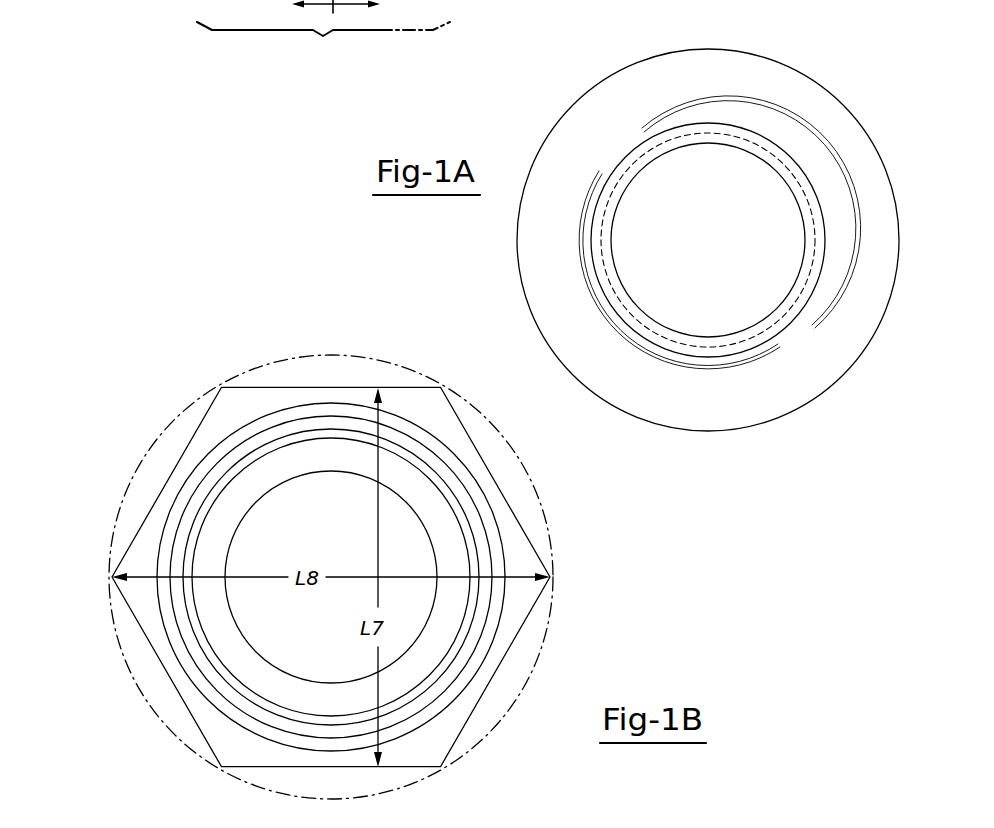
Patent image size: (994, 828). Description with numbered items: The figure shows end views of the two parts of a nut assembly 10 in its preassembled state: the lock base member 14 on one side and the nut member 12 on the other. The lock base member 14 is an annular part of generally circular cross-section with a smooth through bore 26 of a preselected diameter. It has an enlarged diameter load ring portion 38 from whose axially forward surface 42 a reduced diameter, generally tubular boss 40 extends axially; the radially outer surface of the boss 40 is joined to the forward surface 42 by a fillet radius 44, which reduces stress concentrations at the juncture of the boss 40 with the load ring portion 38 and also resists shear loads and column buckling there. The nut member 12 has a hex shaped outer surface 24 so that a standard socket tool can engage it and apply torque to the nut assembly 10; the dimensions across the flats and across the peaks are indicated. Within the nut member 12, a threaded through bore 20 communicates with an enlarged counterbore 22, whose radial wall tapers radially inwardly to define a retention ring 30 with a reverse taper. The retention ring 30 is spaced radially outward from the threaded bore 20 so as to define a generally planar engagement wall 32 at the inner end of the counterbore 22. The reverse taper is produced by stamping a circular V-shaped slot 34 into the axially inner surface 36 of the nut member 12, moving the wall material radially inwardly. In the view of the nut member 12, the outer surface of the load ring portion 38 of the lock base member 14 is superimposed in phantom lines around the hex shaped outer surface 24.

In FIG. 1A, the nut assembly 10 is at (323, 31).
In FIG. 1B, the nut member 12 is at (506, 483).
In FIG. 1A, the lock base member 14 is at (757, 51).
In FIG. 1B, the lock base member 14 is at (128, 466).
In FIG. 1B, the threaded through bore 20 is at (395, 508).
In FIG. 1B, the counterbore 22 is at (260, 673).
In FIG. 1B, the hex shaped outer surface 24 is at (517, 635).
In FIG. 1A, the through bore 26 is at (643, 170).
In FIG. 1B, the retention ring 30 is at (252, 460).
In FIG. 1B, the engagement wall 32 is at (350, 457).
In FIG. 1B, the V-shaped slot 34 is at (330, 410).
In FIG. 1B, the axially inner surface 36 is at (523, 558).
In FIG. 1B, the load ring portion 38 is at (167, 435).
In FIG. 1A, the boss 40 is at (787, 160).
In FIG. 1A, the forward surface 42 is at (853, 150).
In FIG. 1A, the fillet radius 44 is at (670, 117).